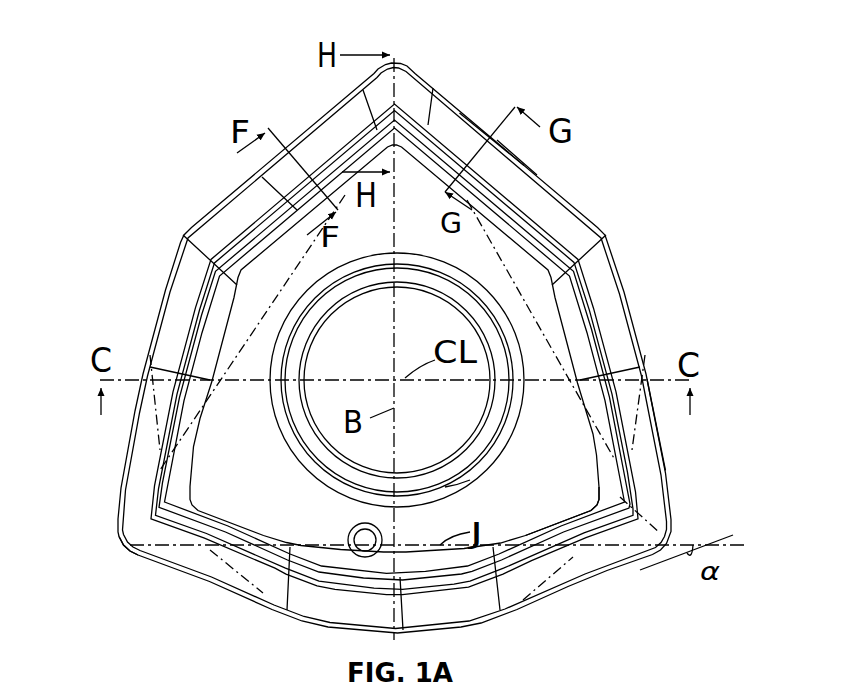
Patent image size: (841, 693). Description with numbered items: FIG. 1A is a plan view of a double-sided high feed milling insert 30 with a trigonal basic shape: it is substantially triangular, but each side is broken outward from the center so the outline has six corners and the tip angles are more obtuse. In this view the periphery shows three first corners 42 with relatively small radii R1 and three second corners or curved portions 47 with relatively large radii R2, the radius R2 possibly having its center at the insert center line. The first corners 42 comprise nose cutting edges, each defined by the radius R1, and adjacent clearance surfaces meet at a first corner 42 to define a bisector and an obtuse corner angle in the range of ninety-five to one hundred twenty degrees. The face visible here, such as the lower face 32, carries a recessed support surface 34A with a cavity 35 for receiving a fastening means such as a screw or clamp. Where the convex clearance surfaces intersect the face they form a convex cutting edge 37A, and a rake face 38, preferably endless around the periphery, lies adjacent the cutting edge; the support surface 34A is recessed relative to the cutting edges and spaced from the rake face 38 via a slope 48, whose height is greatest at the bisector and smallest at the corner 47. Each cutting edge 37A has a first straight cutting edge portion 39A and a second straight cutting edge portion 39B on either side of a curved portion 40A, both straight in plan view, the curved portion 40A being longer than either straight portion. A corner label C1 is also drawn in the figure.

The high feed milling insert 30 is at (387, 375).
The lower face 32 is at (240, 247).
The recessed support surface 34A is at (530, 273).
The cavity 35 is at (322, 332).
The convex cutting edge 37A is at (153, 318).
The rake face 38 is at (582, 568).
The first straight cutting edge portion 39A is at (475, 110).
The second straight cutting edge portion 39B is at (667, 447).
The curved portion 40A is at (183, 230).
The first corner 42 is at (424, 54).
The second corner 47 is at (167, 247).
The slope 48 is at (170, 437).
The small radius R1 is at (147, 560).
The large radius R2 is at (458, 470).
The inner corner C1 is at (635, 437).